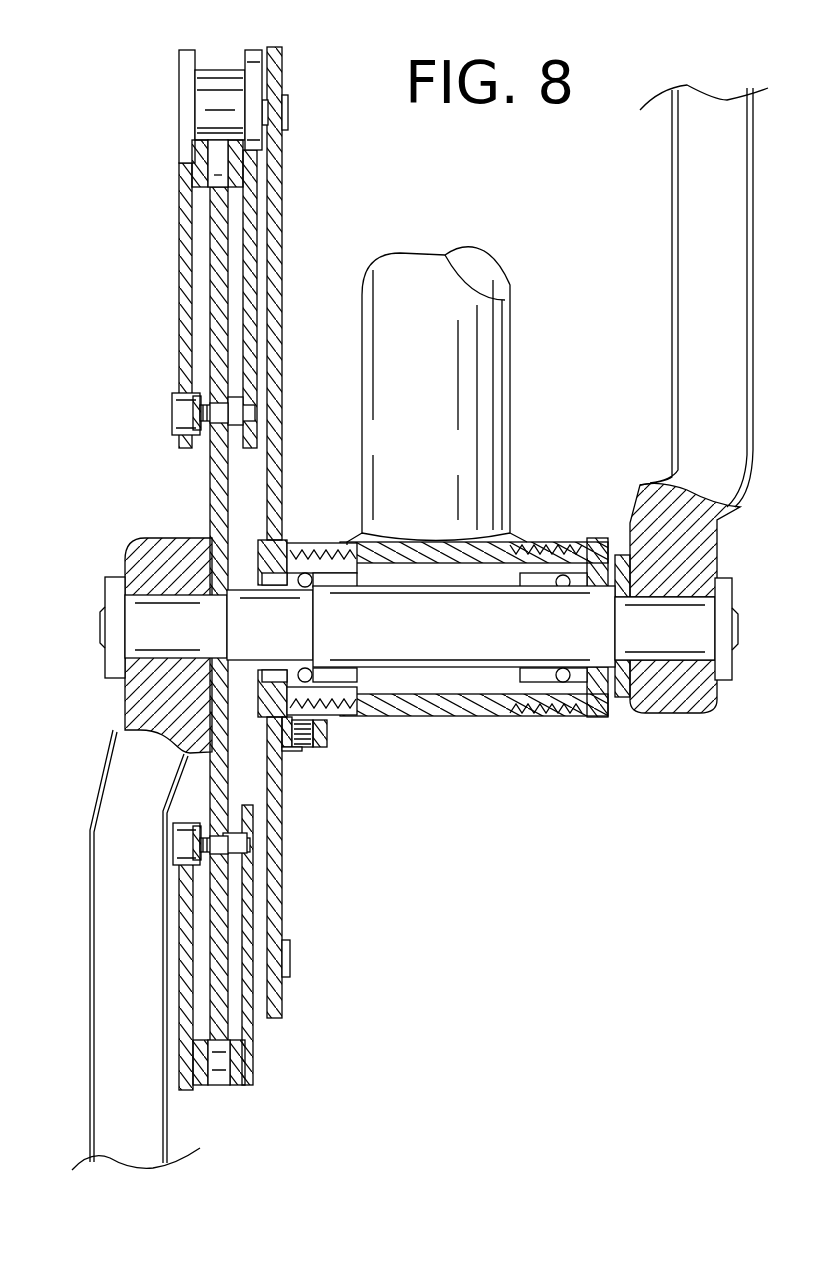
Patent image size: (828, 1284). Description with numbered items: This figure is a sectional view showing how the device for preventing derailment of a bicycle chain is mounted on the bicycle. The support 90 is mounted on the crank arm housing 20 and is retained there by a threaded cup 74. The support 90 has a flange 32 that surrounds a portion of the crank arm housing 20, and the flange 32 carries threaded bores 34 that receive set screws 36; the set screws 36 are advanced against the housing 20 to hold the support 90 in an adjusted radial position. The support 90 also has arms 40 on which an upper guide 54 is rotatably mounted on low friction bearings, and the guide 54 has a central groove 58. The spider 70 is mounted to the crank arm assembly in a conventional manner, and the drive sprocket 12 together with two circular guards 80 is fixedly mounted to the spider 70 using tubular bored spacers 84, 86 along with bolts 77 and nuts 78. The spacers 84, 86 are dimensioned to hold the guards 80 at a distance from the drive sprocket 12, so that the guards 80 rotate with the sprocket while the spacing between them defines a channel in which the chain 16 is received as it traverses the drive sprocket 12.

The drive sprocket 12 is at (215, 245).
The chain 16 is at (233, 1088).
The crank arm housing 20 is at (473, 718).
The flange 32 is at (327, 728).
The threaded bores 34 is at (322, 748).
The set screws 36 is at (302, 750).
The arms 40 is at (283, 468).
The upper guide 54 is at (255, 52).
The central groove 58 is at (215, 70).
The spider 70 is at (213, 488).
The threaded cup 74 is at (245, 545).
The bolts 77 is at (215, 440).
The nuts 78 is at (172, 418).
The circular guards 80 is at (245, 252).
The tubular bored spacer 84 is at (198, 395).
The tubular bored spacer 86 is at (230, 408).
The support member 90 is at (277, 1020).